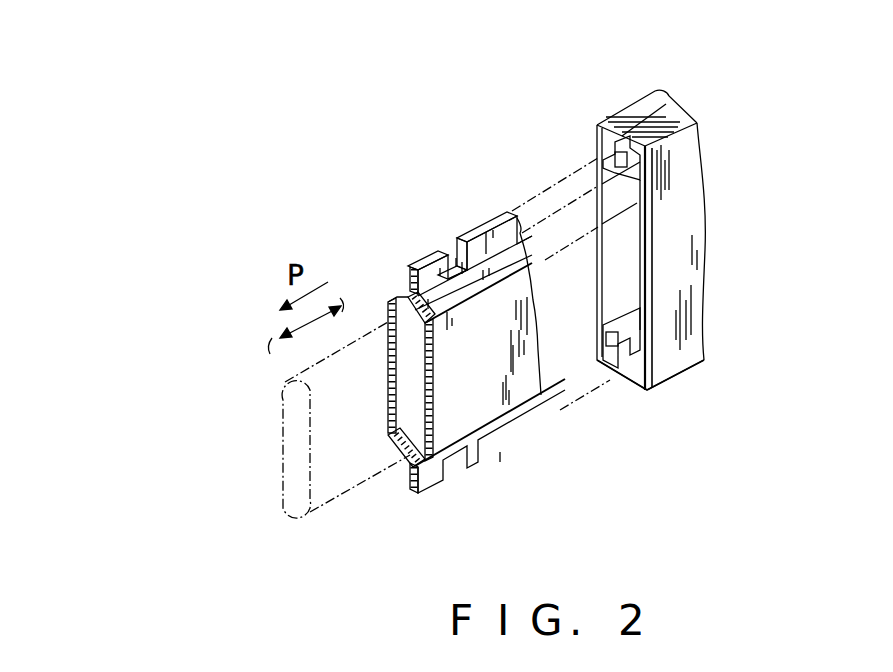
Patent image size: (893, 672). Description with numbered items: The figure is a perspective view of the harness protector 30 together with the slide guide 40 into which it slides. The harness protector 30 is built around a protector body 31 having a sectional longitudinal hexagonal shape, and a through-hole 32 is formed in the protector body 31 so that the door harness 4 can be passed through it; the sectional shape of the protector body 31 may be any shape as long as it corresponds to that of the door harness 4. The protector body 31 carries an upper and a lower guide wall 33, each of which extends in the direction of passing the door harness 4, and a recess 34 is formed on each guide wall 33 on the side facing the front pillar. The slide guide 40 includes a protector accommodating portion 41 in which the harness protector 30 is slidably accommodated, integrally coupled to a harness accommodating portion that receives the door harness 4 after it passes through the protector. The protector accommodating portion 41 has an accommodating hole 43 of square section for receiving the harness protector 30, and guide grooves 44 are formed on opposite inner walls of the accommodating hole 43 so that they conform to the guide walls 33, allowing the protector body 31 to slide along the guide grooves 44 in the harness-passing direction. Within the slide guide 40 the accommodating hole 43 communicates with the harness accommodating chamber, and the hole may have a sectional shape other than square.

The door harness 4 is at (300, 428).
The harness protector 30 is at (432, 213).
The protector body 31 is at (477, 380).
The through-hole 32 is at (395, 435).
The guide wall 33 is at (494, 230).
The recess 34 is at (445, 258).
The slide guide 40 is at (626, 84).
The protector accommodating portion 41 is at (677, 372).
The accommodating hole 43 is at (630, 241).
The guide grooves 44 is at (623, 159).